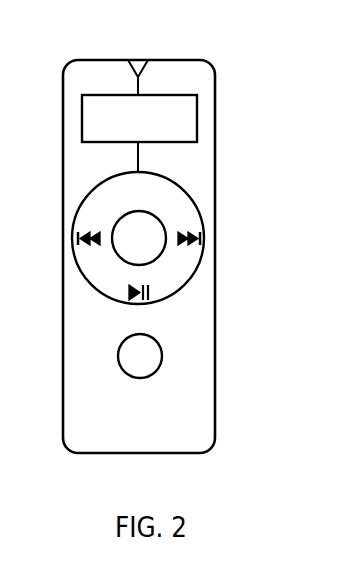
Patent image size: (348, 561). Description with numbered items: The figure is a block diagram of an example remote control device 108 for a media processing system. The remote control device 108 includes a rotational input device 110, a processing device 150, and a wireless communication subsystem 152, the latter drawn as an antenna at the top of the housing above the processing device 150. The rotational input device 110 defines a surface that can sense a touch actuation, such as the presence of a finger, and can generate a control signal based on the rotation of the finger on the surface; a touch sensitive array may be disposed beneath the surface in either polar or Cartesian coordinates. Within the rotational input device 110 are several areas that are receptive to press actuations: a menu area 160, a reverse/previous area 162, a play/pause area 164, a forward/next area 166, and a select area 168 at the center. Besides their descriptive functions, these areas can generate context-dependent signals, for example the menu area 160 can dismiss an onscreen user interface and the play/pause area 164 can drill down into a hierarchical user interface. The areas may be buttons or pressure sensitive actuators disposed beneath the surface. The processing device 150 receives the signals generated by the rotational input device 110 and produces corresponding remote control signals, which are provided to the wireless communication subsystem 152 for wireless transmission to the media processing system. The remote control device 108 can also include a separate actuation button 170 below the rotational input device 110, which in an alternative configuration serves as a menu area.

The remote control device 108 is at (63, 113).
The rotational input device 110 is at (197, 203).
The processing device 150 is at (197, 98).
The wireless communication subsystem 152 is at (145, 66).
The menu area 160 is at (158, 185).
The reverse/previous area 162 is at (78, 226).
The play/pause area 164 is at (200, 252).
The forward/next area 166 is at (152, 289).
The select area 168 is at (140, 236).
The separate actuation button 170 is at (161, 358).